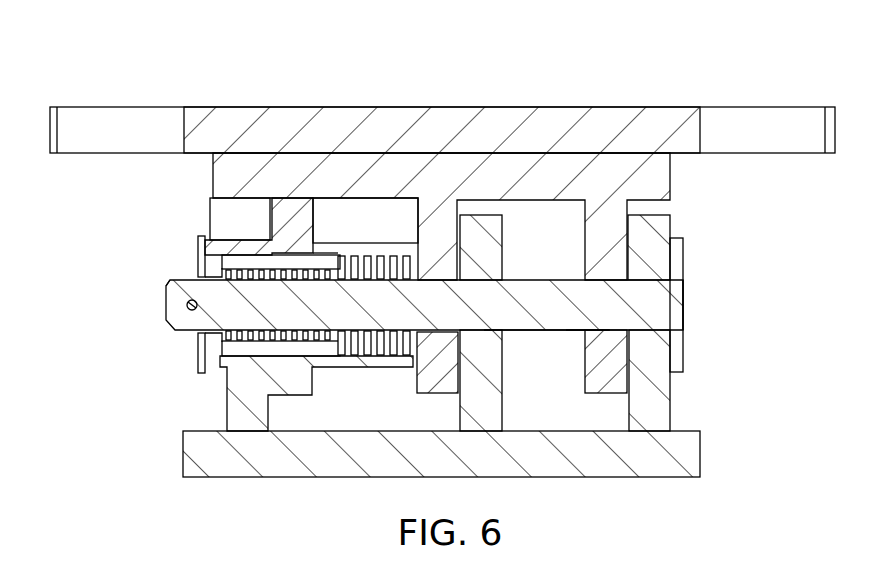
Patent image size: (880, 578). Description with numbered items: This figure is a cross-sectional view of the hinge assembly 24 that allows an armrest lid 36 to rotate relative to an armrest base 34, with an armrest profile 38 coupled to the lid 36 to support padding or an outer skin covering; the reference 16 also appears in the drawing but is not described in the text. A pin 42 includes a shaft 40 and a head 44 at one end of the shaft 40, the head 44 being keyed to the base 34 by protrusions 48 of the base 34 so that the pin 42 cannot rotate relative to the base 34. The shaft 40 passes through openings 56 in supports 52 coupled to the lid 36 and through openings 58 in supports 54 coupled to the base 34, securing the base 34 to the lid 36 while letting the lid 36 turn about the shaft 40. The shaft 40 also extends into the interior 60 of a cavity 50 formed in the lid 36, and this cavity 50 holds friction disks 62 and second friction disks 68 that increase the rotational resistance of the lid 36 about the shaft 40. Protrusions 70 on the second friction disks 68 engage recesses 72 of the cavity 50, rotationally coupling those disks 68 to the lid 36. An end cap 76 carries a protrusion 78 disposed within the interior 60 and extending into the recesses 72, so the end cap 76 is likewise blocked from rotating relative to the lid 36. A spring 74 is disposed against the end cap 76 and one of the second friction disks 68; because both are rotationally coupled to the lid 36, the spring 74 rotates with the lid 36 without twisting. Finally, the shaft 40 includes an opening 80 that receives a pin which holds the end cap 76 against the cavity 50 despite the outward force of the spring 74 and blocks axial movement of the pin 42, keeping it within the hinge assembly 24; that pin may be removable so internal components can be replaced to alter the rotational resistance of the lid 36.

The vehicle door system 16 is at (442, 85).
The hinge assembly 24 is at (747, 289).
The armrest base 34 is at (688, 478).
The armrest lid 36 is at (672, 170).
The armrest profile 38 is at (632, 120).
The shaft 40 is at (549, 278).
The pin 42 is at (160, 290).
The head 44 is at (684, 357).
The protrusions 48 is at (684, 290).
The cavity 50 is at (337, 368).
The supports 52 is at (455, 243).
The supports 54 is at (672, 398).
The opening 56 is at (609, 330).
The opening 58 is at (685, 303).
The interior 60 is at (230, 336).
The friction disks 62 is at (341, 256).
The second friction disks 68 is at (406, 356).
The protrusions 70 is at (332, 255).
The recesses 72 is at (247, 248).
The spring 74 is at (283, 272).
The end cap 76 is at (199, 240).
The protrusion 78 is at (212, 365).
The opening 80 is at (189, 301).